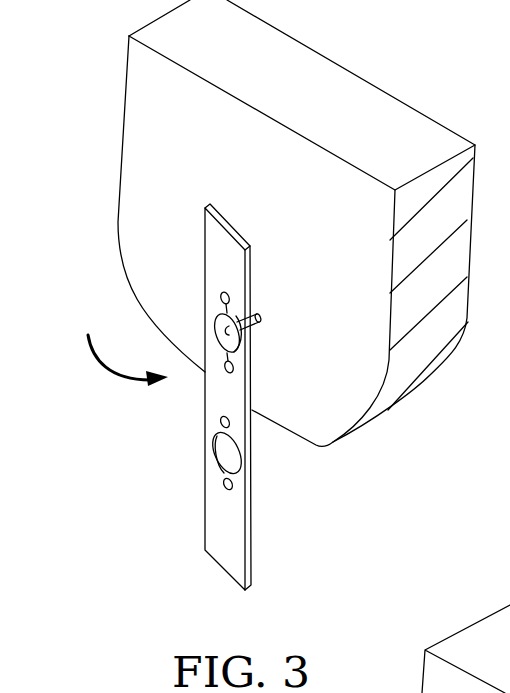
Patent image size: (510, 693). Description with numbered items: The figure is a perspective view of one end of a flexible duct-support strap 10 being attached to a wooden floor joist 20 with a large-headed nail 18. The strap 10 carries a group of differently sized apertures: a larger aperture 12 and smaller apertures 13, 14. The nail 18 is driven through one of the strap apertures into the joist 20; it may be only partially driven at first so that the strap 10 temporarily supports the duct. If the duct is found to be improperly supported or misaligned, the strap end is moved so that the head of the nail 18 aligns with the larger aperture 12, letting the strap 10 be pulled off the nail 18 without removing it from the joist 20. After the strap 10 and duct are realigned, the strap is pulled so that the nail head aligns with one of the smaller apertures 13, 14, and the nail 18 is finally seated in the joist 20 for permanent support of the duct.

The strap 10 is at (262, 531).
The larger aperture 12 is at (216, 462).
The smaller aperture 13 is at (221, 420).
The smaller aperture 14 is at (228, 492).
The large-headed nail 18 is at (213, 325).
The wooden floor joist 20 is at (357, 226).